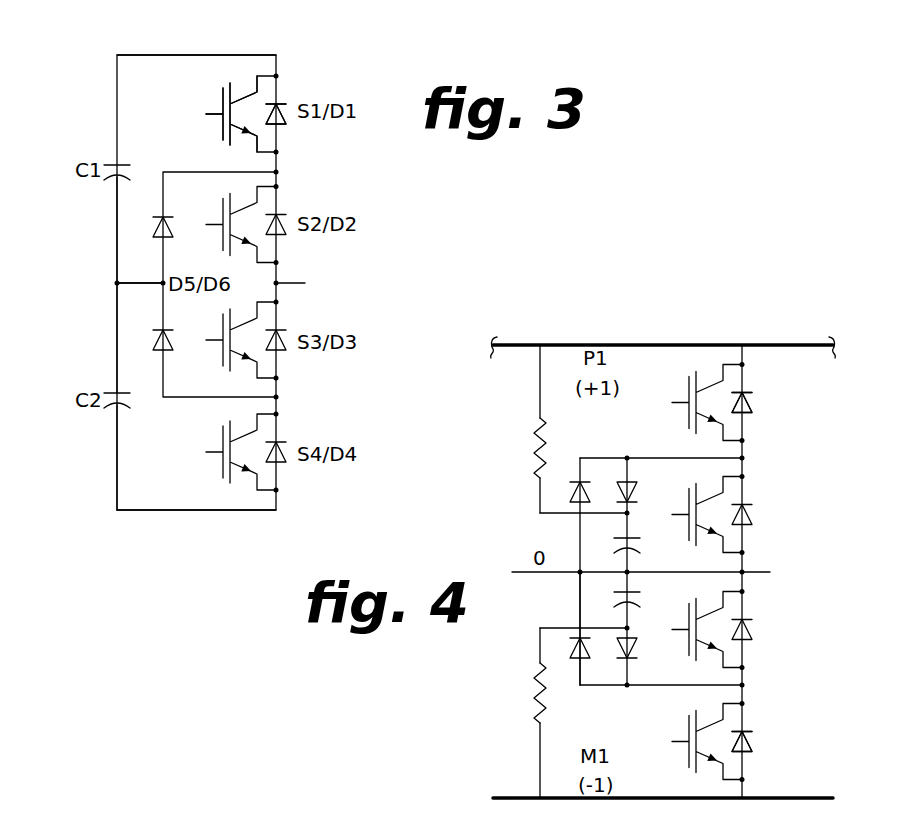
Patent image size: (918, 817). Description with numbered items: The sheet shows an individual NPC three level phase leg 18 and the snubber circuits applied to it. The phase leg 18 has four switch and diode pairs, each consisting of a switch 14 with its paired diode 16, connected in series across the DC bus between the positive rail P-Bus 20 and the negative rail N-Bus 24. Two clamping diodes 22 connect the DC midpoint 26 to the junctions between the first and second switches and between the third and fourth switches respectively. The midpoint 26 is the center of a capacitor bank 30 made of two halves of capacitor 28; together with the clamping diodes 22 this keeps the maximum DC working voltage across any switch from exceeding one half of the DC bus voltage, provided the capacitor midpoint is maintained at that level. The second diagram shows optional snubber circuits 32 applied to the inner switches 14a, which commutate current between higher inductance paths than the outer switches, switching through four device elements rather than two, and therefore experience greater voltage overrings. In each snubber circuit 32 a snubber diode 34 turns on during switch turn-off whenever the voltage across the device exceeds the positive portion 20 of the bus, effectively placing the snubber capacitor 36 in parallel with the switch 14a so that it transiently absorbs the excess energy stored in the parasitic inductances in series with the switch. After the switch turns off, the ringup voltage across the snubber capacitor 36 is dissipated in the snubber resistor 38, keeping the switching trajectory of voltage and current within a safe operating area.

In FIG. 3, the switch 14 is at (203, 92).
In FIG. 4, the inner switch 14a is at (667, 495).
In FIG. 3, the diode 16 is at (281, 122).
In FIG. 4, the diode 16 is at (752, 400).
In FIG. 3, the NPC three level phase leg 18 is at (332, 82).
In FIG. 3, the P-Bus 20 is at (186, 55).
In FIG. 3, the clamping diode 22 is at (155, 228).
In FIG. 4, the clamping diode 22 is at (578, 650).
In FIG. 3, the N-Bus 24 is at (166, 510).
In FIG. 3, the midpoint 26 is at (117, 283).
In FIG. 3, the capacitor 28 is at (110, 165).
In FIG. 3, the capacitor bank 30 is at (80, 346).
In FIG. 4, the snubber circuit 32 is at (562, 700).
In FIG. 4, the snubber diode 34 is at (645, 650).
In FIG. 4, the snubber capacitor 36 is at (640, 595).
In FIG. 4, the snubber resistor 38 is at (540, 695).